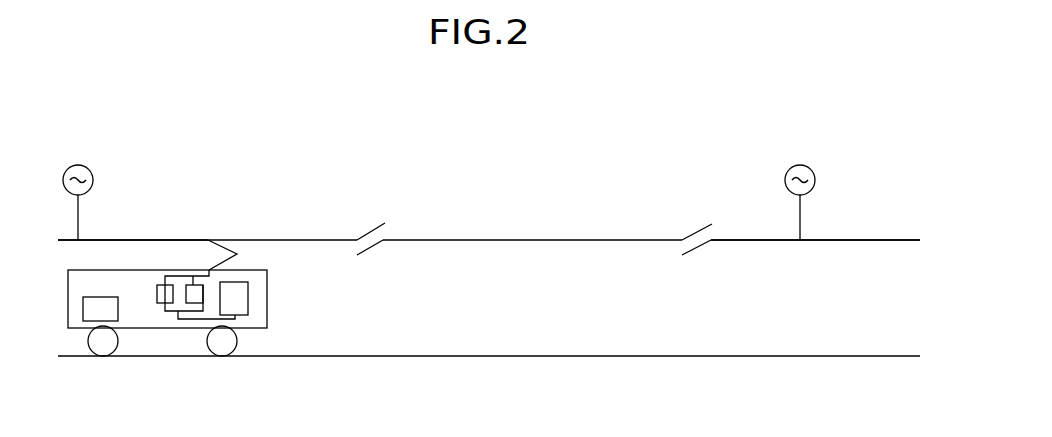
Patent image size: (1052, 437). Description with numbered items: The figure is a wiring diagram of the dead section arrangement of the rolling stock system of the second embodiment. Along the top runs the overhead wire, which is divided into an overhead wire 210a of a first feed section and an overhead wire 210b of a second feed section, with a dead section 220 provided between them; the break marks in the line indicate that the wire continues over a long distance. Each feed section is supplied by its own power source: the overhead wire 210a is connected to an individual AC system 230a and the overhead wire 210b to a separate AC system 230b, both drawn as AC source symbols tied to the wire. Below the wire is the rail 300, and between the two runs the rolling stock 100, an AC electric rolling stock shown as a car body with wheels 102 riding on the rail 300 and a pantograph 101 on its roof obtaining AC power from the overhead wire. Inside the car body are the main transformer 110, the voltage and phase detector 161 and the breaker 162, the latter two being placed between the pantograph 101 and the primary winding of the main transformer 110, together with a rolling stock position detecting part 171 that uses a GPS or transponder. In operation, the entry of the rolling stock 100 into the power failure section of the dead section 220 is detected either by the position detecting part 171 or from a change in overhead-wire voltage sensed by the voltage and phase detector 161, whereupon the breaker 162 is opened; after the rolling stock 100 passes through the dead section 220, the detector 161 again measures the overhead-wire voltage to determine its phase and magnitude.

The rolling stock 100 is at (265, 258).
The pantograph 101 is at (228, 245).
The wheel 102 is at (220, 347).
The main transformer 110 is at (247, 312).
The voltage and phase detector 161 is at (158, 302).
The breaker 162 is at (188, 300).
The rolling stock position detecting part 171 is at (89, 315).
The overhead wire of first feed section 210a is at (137, 238).
The overhead wire of second feed section 210b is at (862, 238).
The dead section 220 is at (578, 238).
The AC system 230a is at (88, 165).
The AC system 230b is at (800, 163).
The rail 300 is at (430, 357).